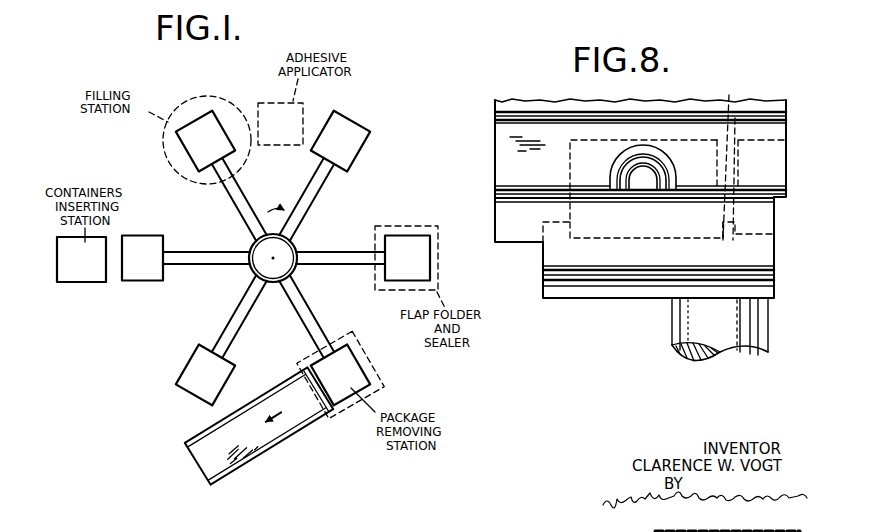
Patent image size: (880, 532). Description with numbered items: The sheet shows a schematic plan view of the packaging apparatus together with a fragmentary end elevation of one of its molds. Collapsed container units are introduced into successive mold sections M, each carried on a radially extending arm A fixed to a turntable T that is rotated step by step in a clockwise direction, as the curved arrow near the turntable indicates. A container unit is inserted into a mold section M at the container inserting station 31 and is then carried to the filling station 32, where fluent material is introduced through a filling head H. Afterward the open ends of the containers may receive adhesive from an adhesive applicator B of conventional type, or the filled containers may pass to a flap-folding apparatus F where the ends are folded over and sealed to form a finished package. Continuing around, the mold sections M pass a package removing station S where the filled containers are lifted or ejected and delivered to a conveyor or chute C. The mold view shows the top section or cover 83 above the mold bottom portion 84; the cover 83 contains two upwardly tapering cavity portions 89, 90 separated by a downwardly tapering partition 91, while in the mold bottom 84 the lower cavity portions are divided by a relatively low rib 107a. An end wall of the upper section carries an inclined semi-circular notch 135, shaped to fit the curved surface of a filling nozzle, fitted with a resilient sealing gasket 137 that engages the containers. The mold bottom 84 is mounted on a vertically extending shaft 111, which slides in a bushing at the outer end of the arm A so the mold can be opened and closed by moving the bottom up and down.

In FIG. 1, the container inserting station 31 is at (68, 276).
In FIG. 1, the filling station 32 is at (207, 126).
In FIG. 1, the filling head H is at (203, 97).
In FIG. 1, the adhesive applicator B is at (285, 147).
In FIG. 1, the mold section M is at (351, 149).
In FIG. 1, the arm A is at (216, 257).
In FIG. 1, the turntable T is at (260, 266).
In FIG. 1, the flap-folding apparatus F is at (410, 226).
In FIG. 1, the package removing station S is at (380, 366).
In FIG. 1, the conveyor or chute C is at (287, 430).
In FIG. 8, the mold cover 83 is at (505, 142).
In FIG. 8, the mold bottom portion 84 is at (610, 299).
In FIG. 8, the cavity portion 89 is at (582, 170).
In FIG. 8, the cavity portion 90 is at (775, 166).
In FIG. 8, the partition 91 is at (729, 95).
In FIG. 8, the semi-circular notch 135 is at (638, 152).
In FIG. 8, the sealing gasket 137 is at (652, 162).
In FIG. 8, the rib 107a is at (722, 226).
In FIG. 8, the shaft 111 is at (686, 336).